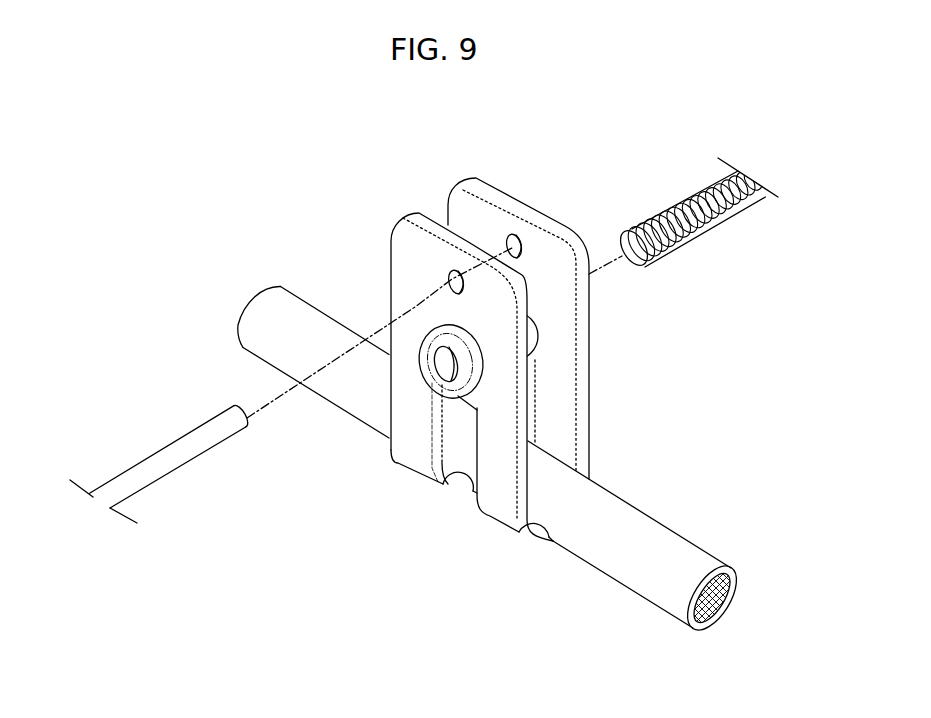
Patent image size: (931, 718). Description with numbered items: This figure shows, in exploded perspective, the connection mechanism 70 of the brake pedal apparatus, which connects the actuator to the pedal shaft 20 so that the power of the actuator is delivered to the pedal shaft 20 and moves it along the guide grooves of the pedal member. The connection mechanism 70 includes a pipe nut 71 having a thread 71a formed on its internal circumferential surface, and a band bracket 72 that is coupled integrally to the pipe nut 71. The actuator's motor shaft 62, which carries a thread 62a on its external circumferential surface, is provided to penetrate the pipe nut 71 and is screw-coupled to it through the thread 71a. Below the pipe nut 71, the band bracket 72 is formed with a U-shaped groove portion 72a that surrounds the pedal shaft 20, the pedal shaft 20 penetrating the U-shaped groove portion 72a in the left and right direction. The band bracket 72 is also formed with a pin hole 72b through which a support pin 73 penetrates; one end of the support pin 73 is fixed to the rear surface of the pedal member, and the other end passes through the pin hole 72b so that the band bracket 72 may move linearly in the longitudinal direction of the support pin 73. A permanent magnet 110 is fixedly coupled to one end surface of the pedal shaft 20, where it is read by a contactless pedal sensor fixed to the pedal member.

The pedal shaft 20 is at (638, 573).
The permanent magnet 110 is at (722, 603).
The connection mechanism 70 is at (462, 378).
The band bracket 72 is at (467, 212).
The U-shaped groove portion 72a is at (472, 496).
The pin hole 72b is at (450, 276).
The pipe nut 71 is at (431, 347).
The thread 71a is at (440, 373).
The motor shaft 62 is at (700, 231).
The thread 62a is at (684, 200).
The support pin 73 is at (183, 441).